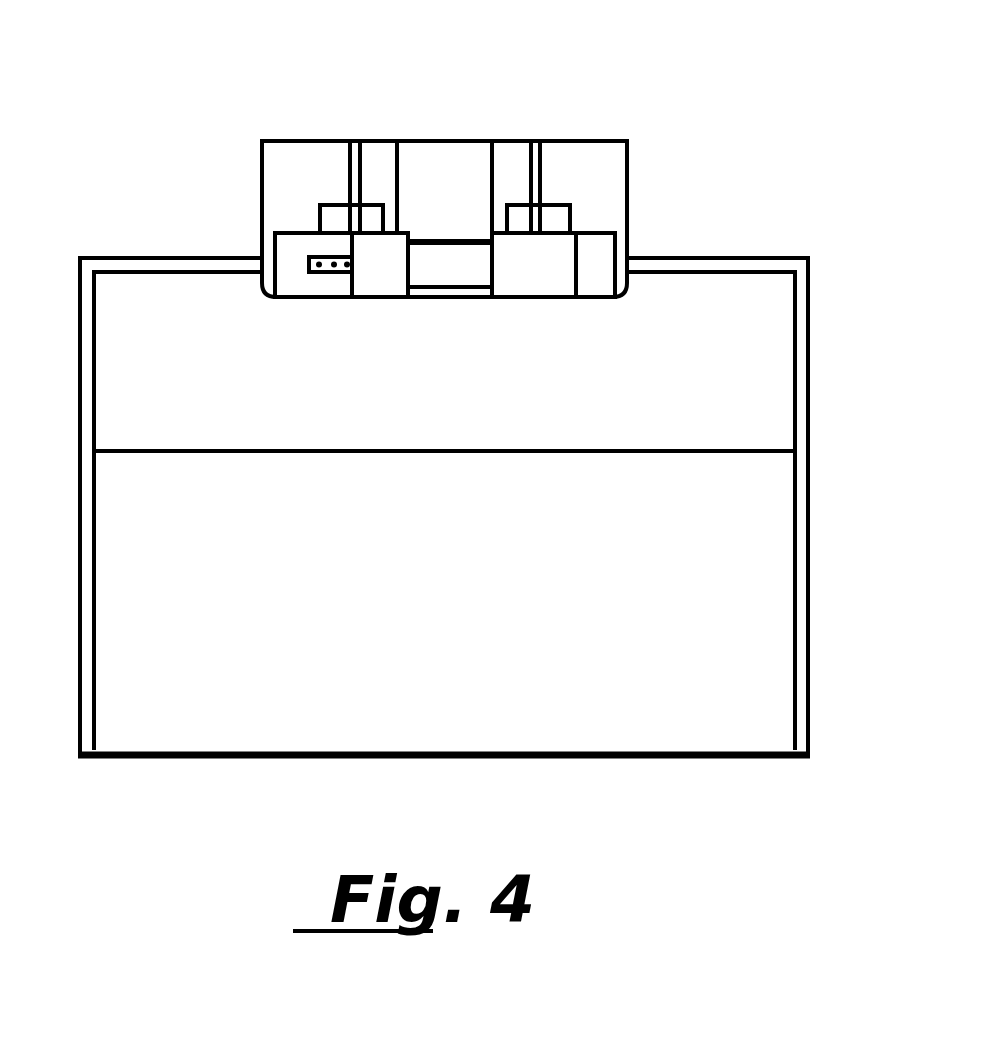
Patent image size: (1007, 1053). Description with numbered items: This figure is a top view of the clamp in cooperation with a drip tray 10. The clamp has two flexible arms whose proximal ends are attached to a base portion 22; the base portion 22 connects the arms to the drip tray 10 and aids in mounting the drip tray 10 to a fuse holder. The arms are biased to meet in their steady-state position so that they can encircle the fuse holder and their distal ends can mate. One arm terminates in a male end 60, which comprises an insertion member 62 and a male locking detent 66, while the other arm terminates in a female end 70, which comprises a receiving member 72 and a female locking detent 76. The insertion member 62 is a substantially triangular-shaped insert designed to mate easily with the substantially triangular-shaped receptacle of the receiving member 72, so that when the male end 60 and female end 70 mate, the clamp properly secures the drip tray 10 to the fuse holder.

The drip tray 10 is at (625, 576).
The base portion 22 is at (590, 139).
The distal male end 60 is at (250, 238).
The insertion member 62 is at (385, 283).
The male locking detent 66 is at (310, 273).
The distal female end 70 is at (642, 240).
The receiving member 72 is at (523, 282).
The female locking detent 76 is at (483, 237).